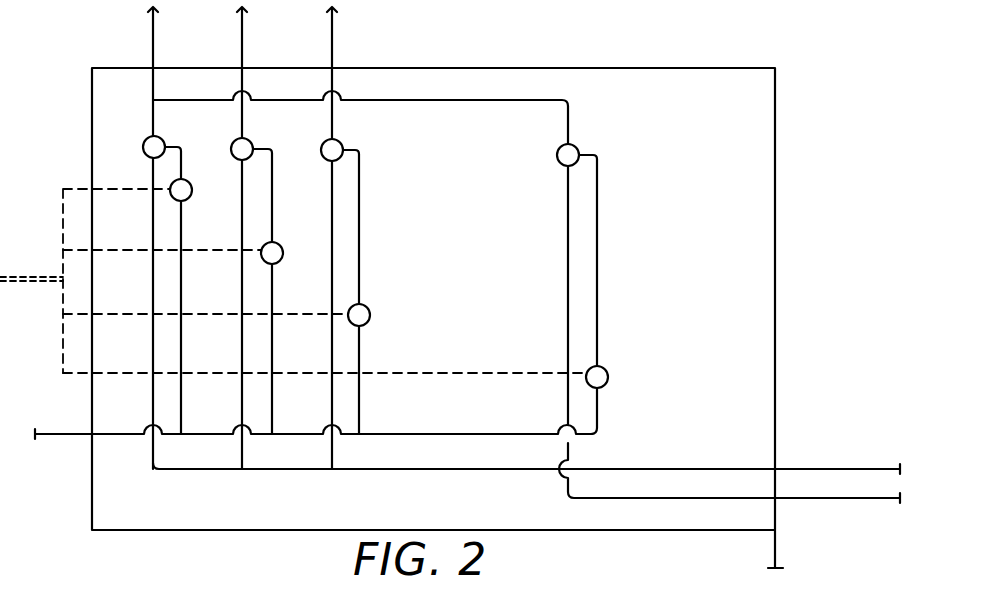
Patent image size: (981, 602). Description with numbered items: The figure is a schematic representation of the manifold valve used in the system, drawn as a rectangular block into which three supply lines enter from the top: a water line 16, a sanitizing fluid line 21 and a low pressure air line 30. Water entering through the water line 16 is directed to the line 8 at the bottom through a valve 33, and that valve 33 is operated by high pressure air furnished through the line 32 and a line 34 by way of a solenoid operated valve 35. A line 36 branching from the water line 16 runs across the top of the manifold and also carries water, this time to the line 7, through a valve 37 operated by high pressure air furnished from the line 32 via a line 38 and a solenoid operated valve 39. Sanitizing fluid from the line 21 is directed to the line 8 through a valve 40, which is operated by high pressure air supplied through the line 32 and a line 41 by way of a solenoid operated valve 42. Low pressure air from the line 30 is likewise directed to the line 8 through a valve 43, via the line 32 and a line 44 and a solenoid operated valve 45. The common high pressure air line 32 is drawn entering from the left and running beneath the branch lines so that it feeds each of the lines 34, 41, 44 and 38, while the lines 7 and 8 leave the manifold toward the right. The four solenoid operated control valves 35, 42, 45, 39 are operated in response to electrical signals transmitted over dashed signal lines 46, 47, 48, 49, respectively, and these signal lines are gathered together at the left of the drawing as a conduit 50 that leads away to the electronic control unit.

The line 7 is at (688, 498).
The line 8 is at (604, 470).
The water line 16 is at (153, 41).
The sanitizing fluid line 21 is at (242, 41).
The low pressure air line 30 is at (332, 41).
The high pressure air line 32 is at (66, 422).
The valve 33 is at (162, 139).
The line 34 is at (181, 232).
The solenoid operated valve 35 is at (191, 186).
The line 36 is at (413, 100).
The valve 37 is at (577, 148).
The line 38 is at (597, 330).
The solenoid operated valve 39 is at (608, 377).
The valve 40 is at (250, 141).
The line 41 is at (272, 223).
The solenoid operated valve 42 is at (281, 261).
The valve 43 is at (340, 142).
The line 44 is at (359, 270).
The solenoid operated valve 45 is at (370, 316).
The electrical signal line 46 is at (105, 188).
The electrical signal line 47 is at (100, 250).
The electrical signal line 48 is at (103, 313).
The electrical signal line 49 is at (100, 372).
The conduit 50 is at (5, 278).